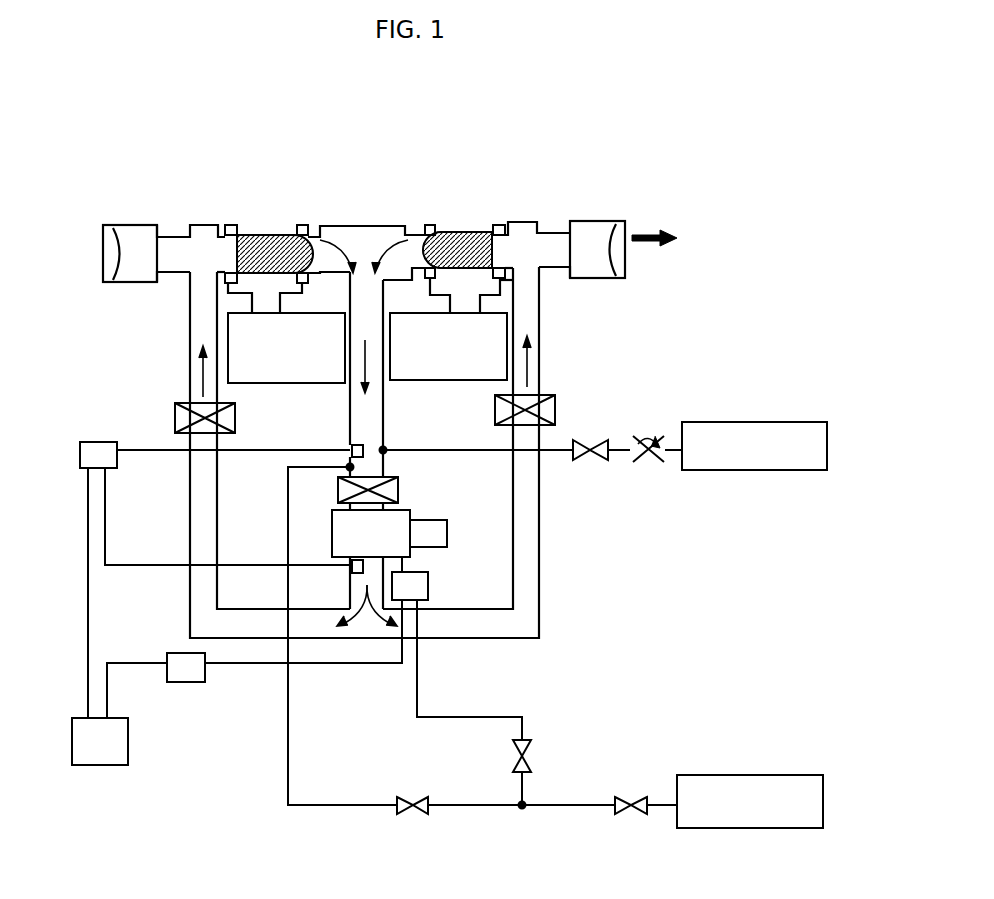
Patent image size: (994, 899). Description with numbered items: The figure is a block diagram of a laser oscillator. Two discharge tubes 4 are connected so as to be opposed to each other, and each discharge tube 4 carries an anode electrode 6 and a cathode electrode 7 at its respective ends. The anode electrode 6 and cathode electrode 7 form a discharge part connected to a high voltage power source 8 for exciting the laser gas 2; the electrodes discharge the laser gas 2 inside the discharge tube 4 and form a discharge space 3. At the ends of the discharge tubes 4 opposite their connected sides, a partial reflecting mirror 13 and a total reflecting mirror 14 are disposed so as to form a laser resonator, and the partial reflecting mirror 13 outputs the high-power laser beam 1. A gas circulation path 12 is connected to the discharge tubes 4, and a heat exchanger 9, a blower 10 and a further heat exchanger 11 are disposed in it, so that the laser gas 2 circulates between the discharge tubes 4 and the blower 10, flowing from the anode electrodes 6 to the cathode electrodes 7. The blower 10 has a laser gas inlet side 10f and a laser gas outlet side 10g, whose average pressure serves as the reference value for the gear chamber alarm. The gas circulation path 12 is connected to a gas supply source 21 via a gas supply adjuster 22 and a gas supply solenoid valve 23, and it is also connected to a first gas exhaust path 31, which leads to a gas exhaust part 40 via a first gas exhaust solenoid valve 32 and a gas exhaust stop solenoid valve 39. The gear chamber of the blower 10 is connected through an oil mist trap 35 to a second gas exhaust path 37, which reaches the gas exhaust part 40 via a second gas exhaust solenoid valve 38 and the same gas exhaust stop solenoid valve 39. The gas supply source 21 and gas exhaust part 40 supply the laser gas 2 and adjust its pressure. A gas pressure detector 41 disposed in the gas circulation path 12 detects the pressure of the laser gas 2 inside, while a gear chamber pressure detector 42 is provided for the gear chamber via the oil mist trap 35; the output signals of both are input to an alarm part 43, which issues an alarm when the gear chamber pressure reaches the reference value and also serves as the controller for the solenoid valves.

The high-power laser beam 1 is at (652, 232).
The laser gas 2 is at (200, 375).
The discharge space 3 is at (280, 232).
The discharge tube 4 is at (262, 232).
The anode electrode 6 is at (231, 223).
The cathode electrode 7 is at (303, 224).
The high voltage power source 8 is at (226, 328).
The heat exchanger 9 is at (400, 488).
The blower 10 is at (340, 535).
The laser gas inlet side 10f is at (395, 506).
The laser gas outlet side 10g is at (352, 568).
The heat exchanger 11 is at (175, 415).
The gas circulation path 12 is at (190, 525).
The partial reflecting mirror 13 is at (612, 220).
The total reflecting mirror 14 is at (112, 225).
The gas supply source 21 is at (788, 422).
The gas supply adjuster 22 is at (657, 425).
The gas supply solenoid valve 23 is at (586, 440).
The first gas exhaust path 31 is at (293, 727).
The first gas exhaust solenoid valve 32 is at (420, 797).
The oil mist trap 35 is at (428, 587).
The second gas exhaust path 37 is at (487, 714).
The second gas exhaust solenoid valve 38 is at (532, 748).
The gas exhaust stop solenoid valve 39 is at (640, 797).
The gas exhaust part 40 is at (765, 775).
The gas pressure detector 41 is at (87, 442).
The gear chamber pressure detector 42 is at (193, 683).
The alarm part 43 is at (100, 765).